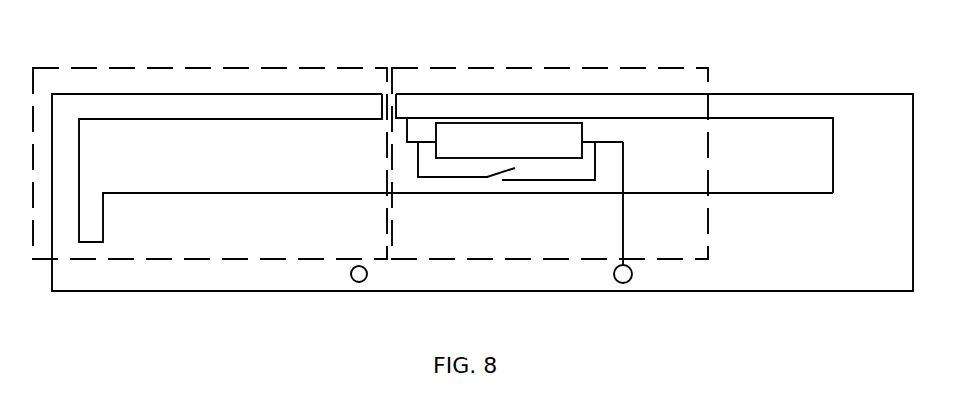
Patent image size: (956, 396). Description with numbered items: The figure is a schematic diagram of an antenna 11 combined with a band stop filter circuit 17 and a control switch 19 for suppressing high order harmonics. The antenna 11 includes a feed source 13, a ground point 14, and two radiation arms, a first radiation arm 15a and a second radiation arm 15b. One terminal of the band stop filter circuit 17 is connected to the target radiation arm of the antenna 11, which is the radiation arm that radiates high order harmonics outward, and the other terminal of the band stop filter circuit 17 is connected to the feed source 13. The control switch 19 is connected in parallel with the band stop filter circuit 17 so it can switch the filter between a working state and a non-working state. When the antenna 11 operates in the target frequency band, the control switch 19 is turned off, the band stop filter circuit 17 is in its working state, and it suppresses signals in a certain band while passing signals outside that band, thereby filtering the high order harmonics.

The antenna 11 is at (815, 94).
The first radiation arm 15a is at (227, 93).
The second radiation arm 15b is at (608, 93).
The band stop filter circuit 17 is at (517, 125).
The control switch 19 is at (497, 173).
The feed source 13 is at (632, 274).
The ground point 14 is at (360, 274).